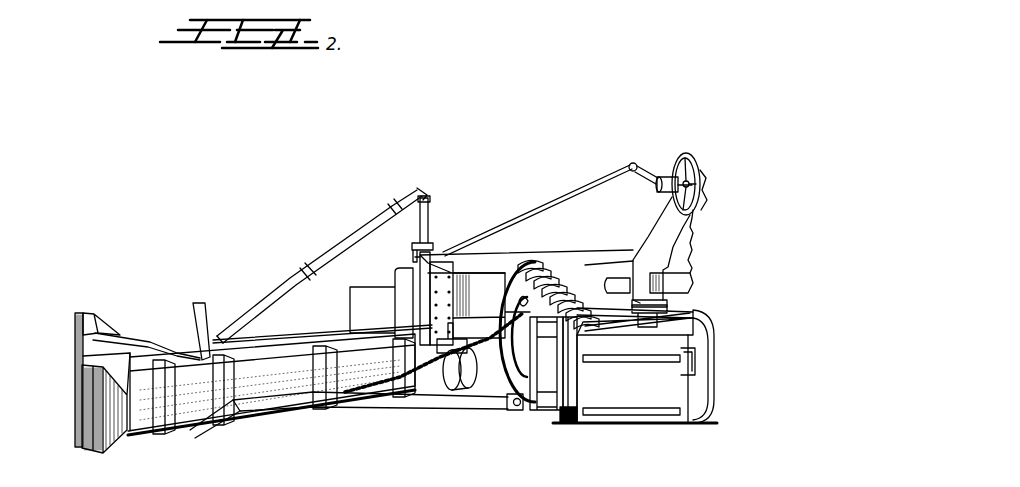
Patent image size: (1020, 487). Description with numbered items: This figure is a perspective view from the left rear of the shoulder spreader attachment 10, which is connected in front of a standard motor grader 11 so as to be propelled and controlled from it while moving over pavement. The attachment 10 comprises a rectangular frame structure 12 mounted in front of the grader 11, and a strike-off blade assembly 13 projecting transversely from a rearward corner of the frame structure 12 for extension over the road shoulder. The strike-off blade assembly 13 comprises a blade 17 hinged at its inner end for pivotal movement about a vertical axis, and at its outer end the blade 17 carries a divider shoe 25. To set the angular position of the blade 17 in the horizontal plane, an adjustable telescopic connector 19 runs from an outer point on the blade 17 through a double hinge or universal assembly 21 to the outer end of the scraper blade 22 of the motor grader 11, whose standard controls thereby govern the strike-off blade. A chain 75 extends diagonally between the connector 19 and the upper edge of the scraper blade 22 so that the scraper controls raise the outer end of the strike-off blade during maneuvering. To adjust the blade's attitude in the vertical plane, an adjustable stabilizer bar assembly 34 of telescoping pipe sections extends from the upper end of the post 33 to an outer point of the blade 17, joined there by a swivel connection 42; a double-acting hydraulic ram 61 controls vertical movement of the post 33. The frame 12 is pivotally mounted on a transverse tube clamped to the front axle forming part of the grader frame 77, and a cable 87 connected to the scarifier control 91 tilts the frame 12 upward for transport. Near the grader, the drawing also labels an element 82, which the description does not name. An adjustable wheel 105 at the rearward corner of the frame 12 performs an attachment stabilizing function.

The shoulder spreader attachment 10 is at (144, 173).
The motor grader 11 is at (595, 440).
The frame structure 12 is at (500, 256).
The strike-off blade assembly 13 is at (56, 397).
The blade 17 is at (283, 357).
The adjustable telescopic connector 19 is at (357, 409).
The double hinge or universal assembly 21 is at (526, 418).
The scraper blade 22 is at (640, 400).
The divider shoe 25 is at (80, 335).
The post 33 is at (432, 232).
The adjustable stabilizer bar assembly 34 is at (316, 258).
The swivel connection 42 is at (232, 338).
The double-acting hydraulic ram 61 is at (411, 267).
The chain 75 is at (400, 395).
The frame 77 is at (663, 237).
The gear tread 82 is at (549, 268).
The cable 87 is at (548, 207).
The scarifier control 91 is at (706, 158).
The adjustable wheel 105 is at (465, 395).